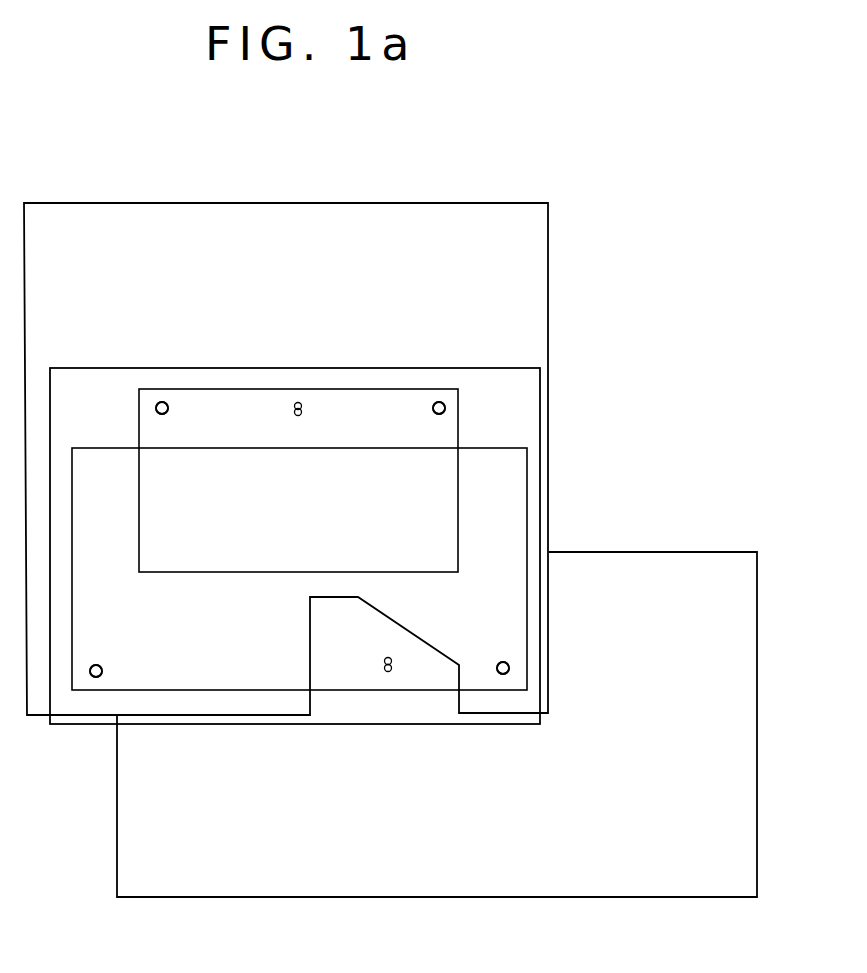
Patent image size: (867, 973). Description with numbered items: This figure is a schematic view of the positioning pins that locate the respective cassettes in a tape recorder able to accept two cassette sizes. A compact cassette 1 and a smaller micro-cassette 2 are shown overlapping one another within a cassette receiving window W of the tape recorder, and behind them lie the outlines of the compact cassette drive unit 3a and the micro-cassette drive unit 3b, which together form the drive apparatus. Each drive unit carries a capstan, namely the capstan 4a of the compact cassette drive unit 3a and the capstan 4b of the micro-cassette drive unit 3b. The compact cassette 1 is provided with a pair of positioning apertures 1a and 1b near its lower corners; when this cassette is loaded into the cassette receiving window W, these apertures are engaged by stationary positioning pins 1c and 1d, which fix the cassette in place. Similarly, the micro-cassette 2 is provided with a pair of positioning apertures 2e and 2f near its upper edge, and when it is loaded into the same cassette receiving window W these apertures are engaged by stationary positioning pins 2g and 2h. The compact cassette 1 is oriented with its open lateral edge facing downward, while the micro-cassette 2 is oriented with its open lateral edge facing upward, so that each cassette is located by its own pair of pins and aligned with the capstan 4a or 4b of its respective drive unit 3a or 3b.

The compact cassette 1 is at (527, 537).
The positioning aperture 1a is at (102, 665).
The positioning aperture 1b is at (503, 662).
The stationary positioning pin 1c is at (95, 665).
The stationary positioning pin 1d is at (509, 670).
The micro-cassette 2 is at (459, 407).
The positioning aperture 2e is at (163, 402).
The positioning aperture 2f is at (439, 402).
The stationary positioning pin 2g is at (167, 413).
The stationary positioning pin 2h is at (433, 413).
The compact cassette drive unit 3a is at (280, 897).
The micro-cassette drive unit 3b is at (549, 272).
The capstan 4a is at (385, 660).
The capstan 4b is at (298, 402).
The cassette receiving window W is at (83, 724).